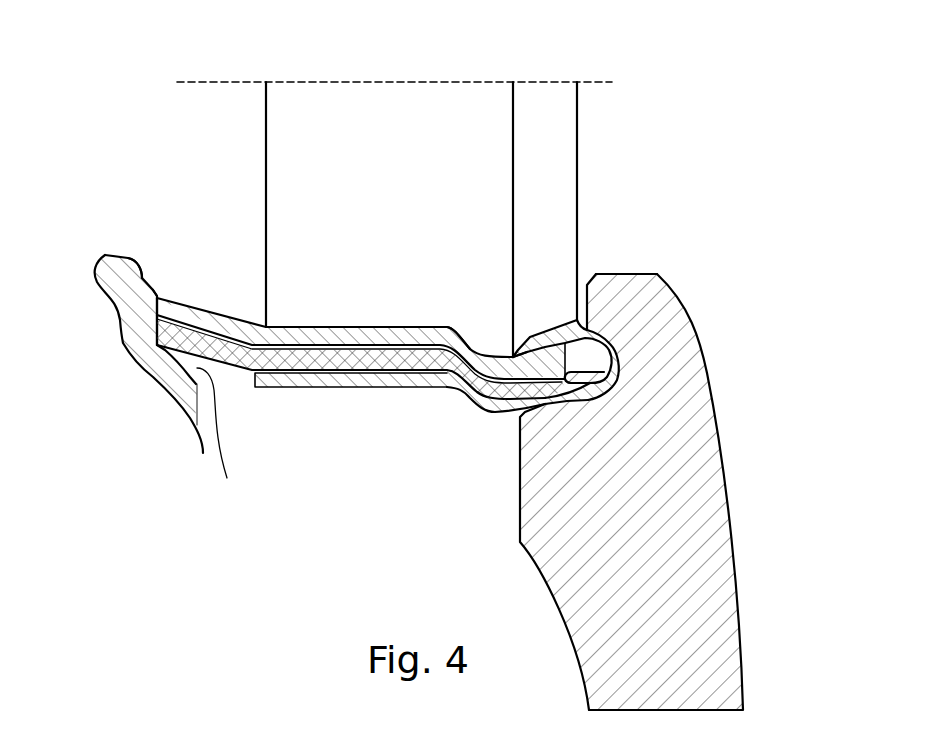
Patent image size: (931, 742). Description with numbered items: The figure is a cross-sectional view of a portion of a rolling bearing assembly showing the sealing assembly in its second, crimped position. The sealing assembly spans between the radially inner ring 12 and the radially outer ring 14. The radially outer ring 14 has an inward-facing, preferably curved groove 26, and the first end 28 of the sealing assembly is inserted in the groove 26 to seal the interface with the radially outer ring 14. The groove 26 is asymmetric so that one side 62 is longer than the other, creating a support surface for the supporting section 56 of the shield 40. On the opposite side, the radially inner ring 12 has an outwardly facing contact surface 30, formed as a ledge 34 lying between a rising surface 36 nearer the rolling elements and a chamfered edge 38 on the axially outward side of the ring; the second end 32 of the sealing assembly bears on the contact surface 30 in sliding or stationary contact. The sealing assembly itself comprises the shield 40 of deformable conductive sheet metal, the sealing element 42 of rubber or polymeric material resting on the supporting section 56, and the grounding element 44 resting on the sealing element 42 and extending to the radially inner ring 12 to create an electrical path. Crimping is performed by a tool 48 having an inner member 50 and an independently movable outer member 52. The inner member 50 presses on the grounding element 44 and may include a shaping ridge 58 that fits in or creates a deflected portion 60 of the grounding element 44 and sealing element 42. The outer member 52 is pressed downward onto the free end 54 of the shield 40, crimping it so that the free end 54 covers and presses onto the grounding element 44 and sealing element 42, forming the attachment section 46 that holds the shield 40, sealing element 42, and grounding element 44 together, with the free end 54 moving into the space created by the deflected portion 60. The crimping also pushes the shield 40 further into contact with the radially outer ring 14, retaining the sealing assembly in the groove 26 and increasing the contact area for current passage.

The radially inner ring 12 is at (168, 373).
The radially outer ring 14 is at (707, 480).
The groove 26 is at (600, 388).
The first end 28 is at (592, 266).
The contact surface 30 is at (157, 313).
The second end 32 is at (167, 270).
The ledge 34 is at (157, 332).
The rising surface 36 is at (218, 435).
The chamfered edge 38 is at (136, 268).
The shield 40 is at (315, 375).
The sealing element 42 is at (223, 360).
The grounding element 44 is at (325, 325).
The attachment section 46 is at (606, 378).
The tool 48 is at (228, 130).
The inner member 50 is at (480, 100).
The outer member 52 is at (560, 145).
The free end 54 is at (521, 333).
The supporting section 56 is at (458, 362).
The shaping ridge 58 is at (508, 354).
The deflected portion 60 is at (471, 340).
The side 62 is at (572, 388).